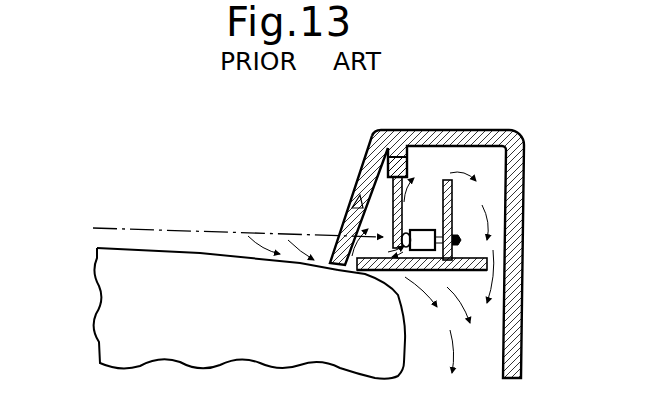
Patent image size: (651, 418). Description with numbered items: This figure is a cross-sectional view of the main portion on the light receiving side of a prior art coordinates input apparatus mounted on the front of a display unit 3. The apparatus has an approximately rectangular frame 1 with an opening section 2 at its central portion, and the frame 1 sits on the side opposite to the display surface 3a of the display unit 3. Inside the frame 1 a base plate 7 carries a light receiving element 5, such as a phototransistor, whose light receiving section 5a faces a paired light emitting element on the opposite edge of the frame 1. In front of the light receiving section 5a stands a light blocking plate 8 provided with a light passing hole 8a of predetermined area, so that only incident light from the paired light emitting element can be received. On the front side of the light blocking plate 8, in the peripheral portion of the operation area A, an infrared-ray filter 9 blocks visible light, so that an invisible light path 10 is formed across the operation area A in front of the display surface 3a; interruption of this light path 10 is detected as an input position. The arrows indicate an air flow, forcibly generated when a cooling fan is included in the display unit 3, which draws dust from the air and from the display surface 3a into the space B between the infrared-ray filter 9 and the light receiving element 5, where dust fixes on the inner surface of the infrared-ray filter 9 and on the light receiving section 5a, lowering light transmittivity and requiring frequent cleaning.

The frame 1 is at (527, 167).
The opening section 2 is at (232, 193).
The display unit 3 is at (98, 295).
The display surface 3a is at (112, 250).
The light receiving element 5 is at (425, 231).
The light receiving section 5a is at (403, 232).
The base plate 7 is at (452, 200).
The light blocking plate 8 is at (401, 128).
The light passing hole 8a is at (389, 200).
The infrared-ray filter 9 is at (343, 220).
The light path 10 is at (200, 230).
The operation area A is at (162, 222).
The space B is at (358, 197).